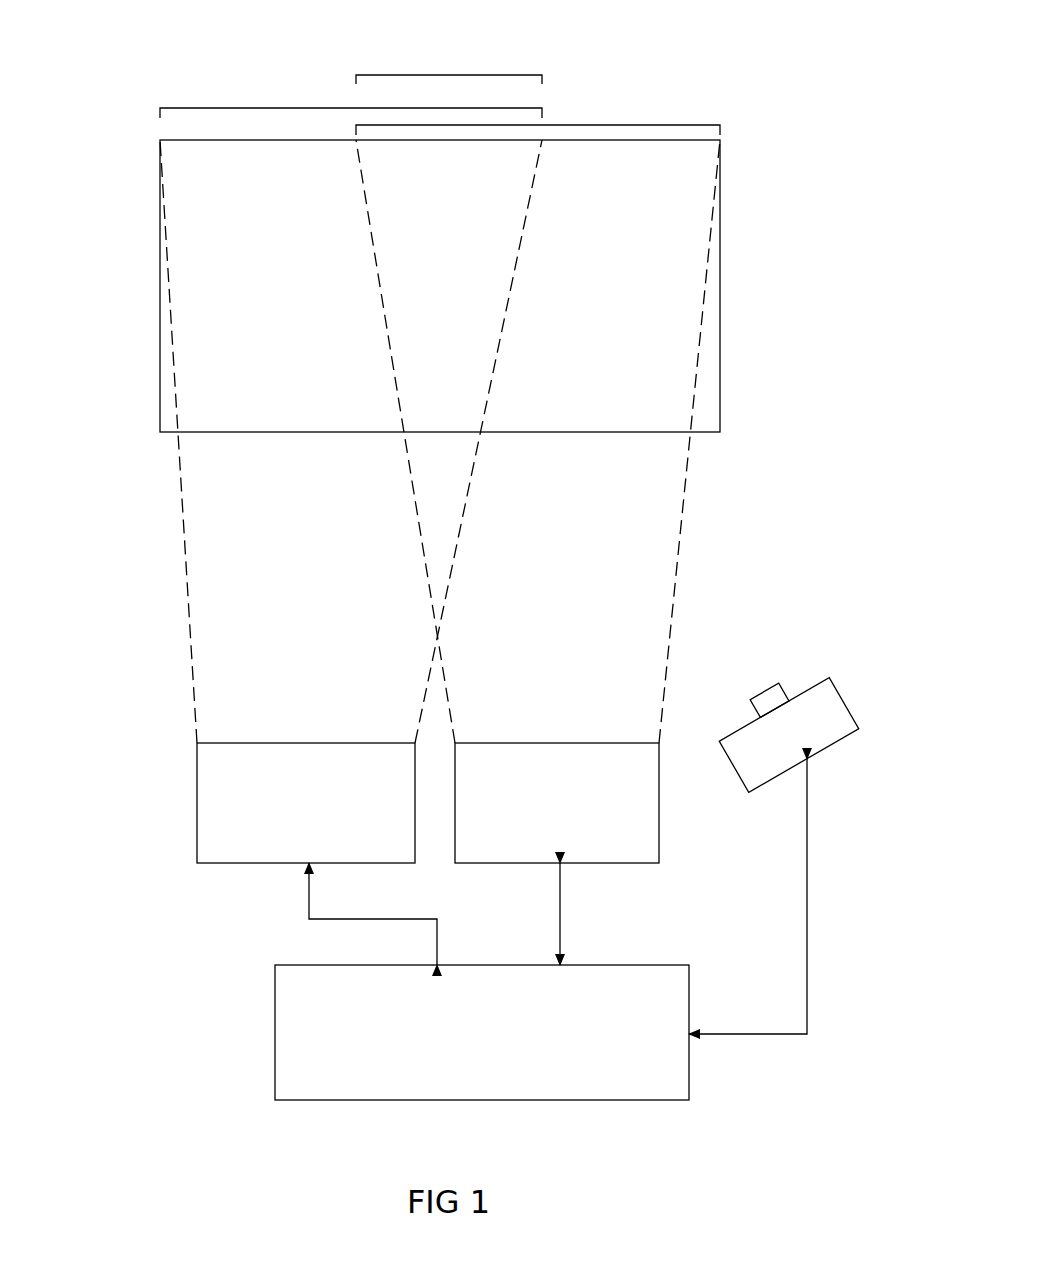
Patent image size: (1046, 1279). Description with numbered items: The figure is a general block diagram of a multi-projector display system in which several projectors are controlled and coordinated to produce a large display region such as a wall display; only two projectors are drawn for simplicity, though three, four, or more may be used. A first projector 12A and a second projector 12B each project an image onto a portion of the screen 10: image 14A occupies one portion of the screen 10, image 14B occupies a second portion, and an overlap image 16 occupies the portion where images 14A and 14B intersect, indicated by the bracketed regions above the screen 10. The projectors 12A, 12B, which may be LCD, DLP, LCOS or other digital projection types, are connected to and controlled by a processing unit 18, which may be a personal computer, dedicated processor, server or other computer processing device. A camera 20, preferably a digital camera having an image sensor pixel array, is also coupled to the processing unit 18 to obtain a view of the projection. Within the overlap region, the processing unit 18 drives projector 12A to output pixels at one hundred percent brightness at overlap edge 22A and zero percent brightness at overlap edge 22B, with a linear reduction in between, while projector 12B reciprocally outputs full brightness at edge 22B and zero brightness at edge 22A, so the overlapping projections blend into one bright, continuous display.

The screen 10 is at (160, 172).
The projector 12A is at (197, 762).
The projector 12B is at (659, 855).
The image 14A is at (351, 98).
The image 14B is at (538, 117).
The overlap image 16 is at (449, 51).
The processing unit 18 is at (275, 1001).
The camera 20 is at (838, 692).
The overlap edge 22A is at (380, 290).
The overlap edge 22B is at (507, 298).